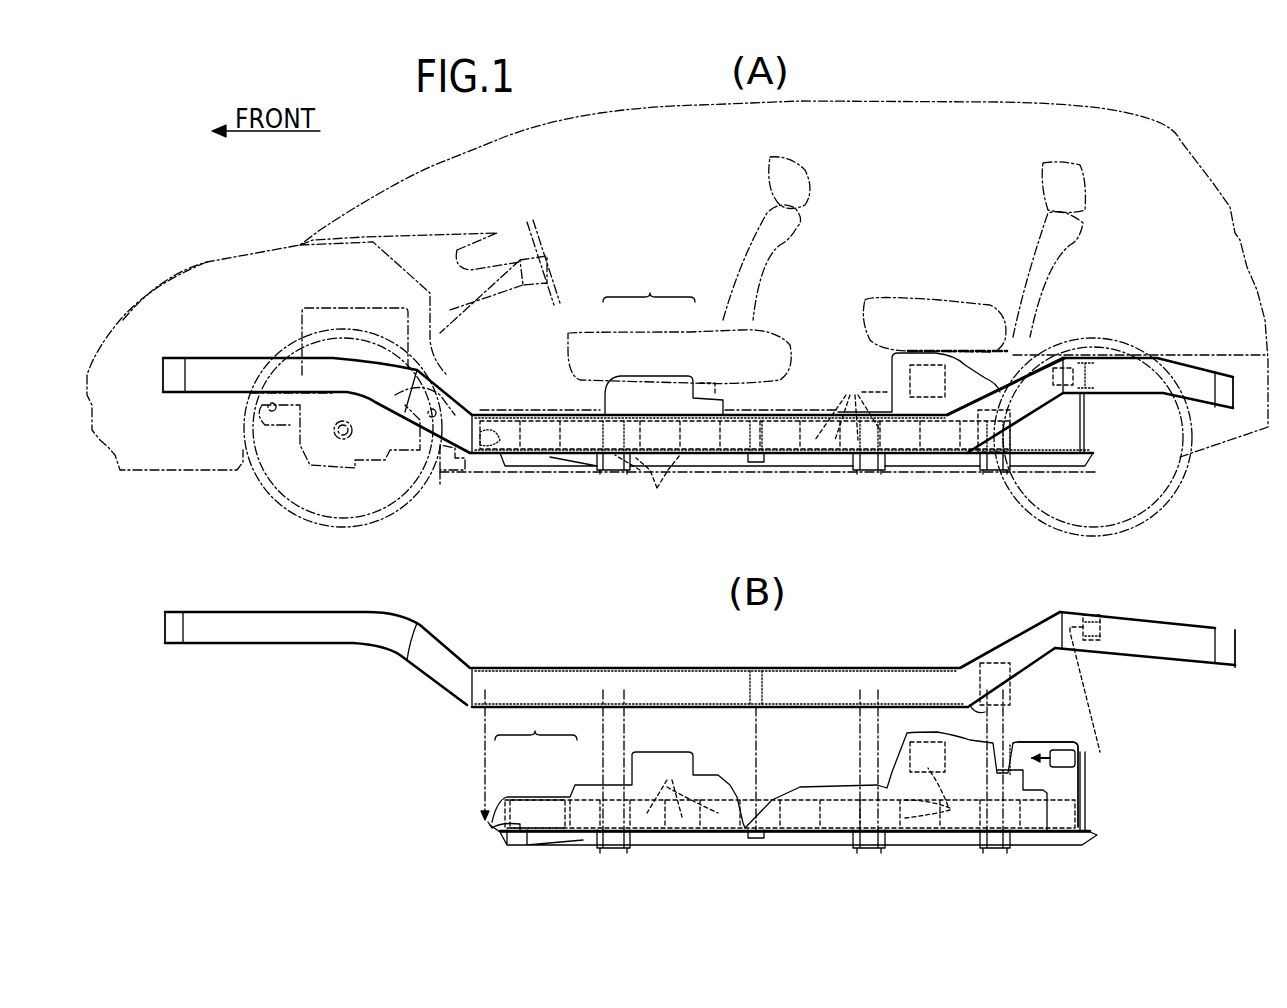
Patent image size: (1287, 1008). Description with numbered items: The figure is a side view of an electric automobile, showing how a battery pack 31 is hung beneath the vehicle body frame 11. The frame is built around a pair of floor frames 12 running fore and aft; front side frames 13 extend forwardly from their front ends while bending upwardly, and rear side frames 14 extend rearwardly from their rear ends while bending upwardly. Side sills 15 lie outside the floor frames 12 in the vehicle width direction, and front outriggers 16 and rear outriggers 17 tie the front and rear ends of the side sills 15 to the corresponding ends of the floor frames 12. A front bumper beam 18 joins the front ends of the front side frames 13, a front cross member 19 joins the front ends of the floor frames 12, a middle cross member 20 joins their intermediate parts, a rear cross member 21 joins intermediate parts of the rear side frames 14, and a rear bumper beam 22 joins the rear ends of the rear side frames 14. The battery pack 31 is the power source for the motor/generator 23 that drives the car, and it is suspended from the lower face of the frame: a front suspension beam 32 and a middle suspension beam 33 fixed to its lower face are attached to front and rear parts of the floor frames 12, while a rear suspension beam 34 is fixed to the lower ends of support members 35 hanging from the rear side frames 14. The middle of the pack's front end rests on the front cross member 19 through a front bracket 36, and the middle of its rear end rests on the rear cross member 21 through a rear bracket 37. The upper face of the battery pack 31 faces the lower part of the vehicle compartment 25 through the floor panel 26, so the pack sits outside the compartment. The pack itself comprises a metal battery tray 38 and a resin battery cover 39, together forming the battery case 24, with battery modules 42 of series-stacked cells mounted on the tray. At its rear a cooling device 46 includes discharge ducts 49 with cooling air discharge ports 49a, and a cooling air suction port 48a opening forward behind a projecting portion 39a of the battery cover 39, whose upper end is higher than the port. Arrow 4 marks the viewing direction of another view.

The arrow 4 is at (953, 275).
The vehicle body frame 11 is at (565, 413).
The floor frame 12 is at (782, 577).
The front side frame 13 is at (243, 365).
The rear side frame 14 is at (1120, 372).
The side sill 15 is at (720, 432).
The front outrigger 16 is at (453, 403).
The rear outrigger 17 is at (1007, 400).
The front bumper beam 18 is at (176, 385).
The front cross member 19 is at (455, 468).
The middle cross member 20 is at (740, 432).
The rear cross member 21 is at (1093, 350).
The rear bumper beam 22 is at (1230, 405).
The motor/generator 23 is at (346, 368).
The battery case 24 is at (595, 503).
The vehicle compartment 25 is at (843, 272).
The floor panel 26 is at (945, 365).
The battery pack 31 is at (803, 472).
The front suspension beam 32 is at (617, 471).
The middle suspension beam 33 is at (872, 472).
The rear suspension beam 34 is at (996, 471).
The support member 35 is at (1012, 443).
The front bracket 36 is at (500, 440).
The rear bracket 37 is at (1087, 412).
The battery tray 38 is at (692, 447).
The battery cover 39 is at (614, 411).
The projecting portion 39a is at (928, 738).
The battery module 42 is at (847, 392).
The cooling device 46 is at (1077, 732).
The cooling air suction port 48a is at (1008, 752).
The discharge duct 49 is at (1049, 741).
The cooling air discharge port 49a is at (1075, 762).